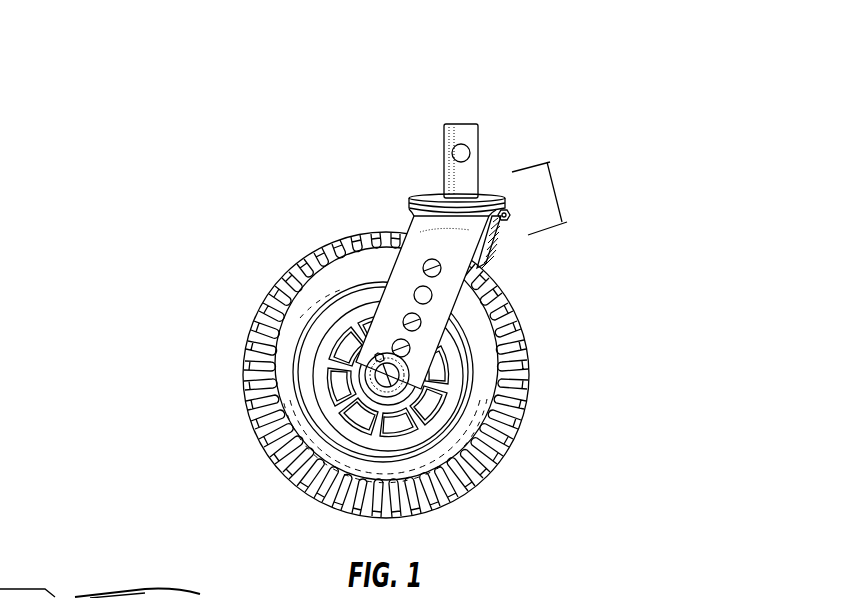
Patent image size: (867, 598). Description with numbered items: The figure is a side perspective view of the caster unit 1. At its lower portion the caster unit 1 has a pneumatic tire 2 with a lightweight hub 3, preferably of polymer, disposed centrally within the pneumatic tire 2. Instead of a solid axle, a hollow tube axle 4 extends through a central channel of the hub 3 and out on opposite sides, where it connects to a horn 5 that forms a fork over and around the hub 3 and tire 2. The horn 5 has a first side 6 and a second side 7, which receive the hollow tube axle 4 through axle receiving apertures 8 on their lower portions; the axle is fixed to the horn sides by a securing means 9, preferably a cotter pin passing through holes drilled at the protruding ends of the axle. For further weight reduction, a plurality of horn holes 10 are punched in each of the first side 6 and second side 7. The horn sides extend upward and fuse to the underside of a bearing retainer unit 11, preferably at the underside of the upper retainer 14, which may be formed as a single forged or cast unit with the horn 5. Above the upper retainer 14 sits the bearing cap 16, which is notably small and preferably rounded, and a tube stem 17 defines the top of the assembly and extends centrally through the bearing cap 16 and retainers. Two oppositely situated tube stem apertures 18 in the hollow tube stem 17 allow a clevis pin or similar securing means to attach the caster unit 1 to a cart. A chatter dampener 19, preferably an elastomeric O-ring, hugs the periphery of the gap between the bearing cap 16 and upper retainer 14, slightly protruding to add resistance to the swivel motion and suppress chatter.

The caster unit 1 is at (360, 299).
The pneumatic tire 2 is at (438, 375).
The hub 3 is at (471, 372).
The hollow tube axle 4 is at (249, 360).
The horn 5 is at (483, 302).
The first side 6 is at (531, 243).
The second side 7 is at (527, 257).
The axle receiving apertures 8 is at (277, 387).
The securing means 9 is at (248, 310).
The horn holes 10 is at (333, 345).
The bearing retainer unit 11 is at (541, 198).
The upper retainer 14 is at (411, 168).
The bearing cap 16 is at (553, 175).
The tube stem 17 is at (505, 145).
The tube stem apertures 18 is at (396, 123).
The chatter dampener 19 is at (341, 171).